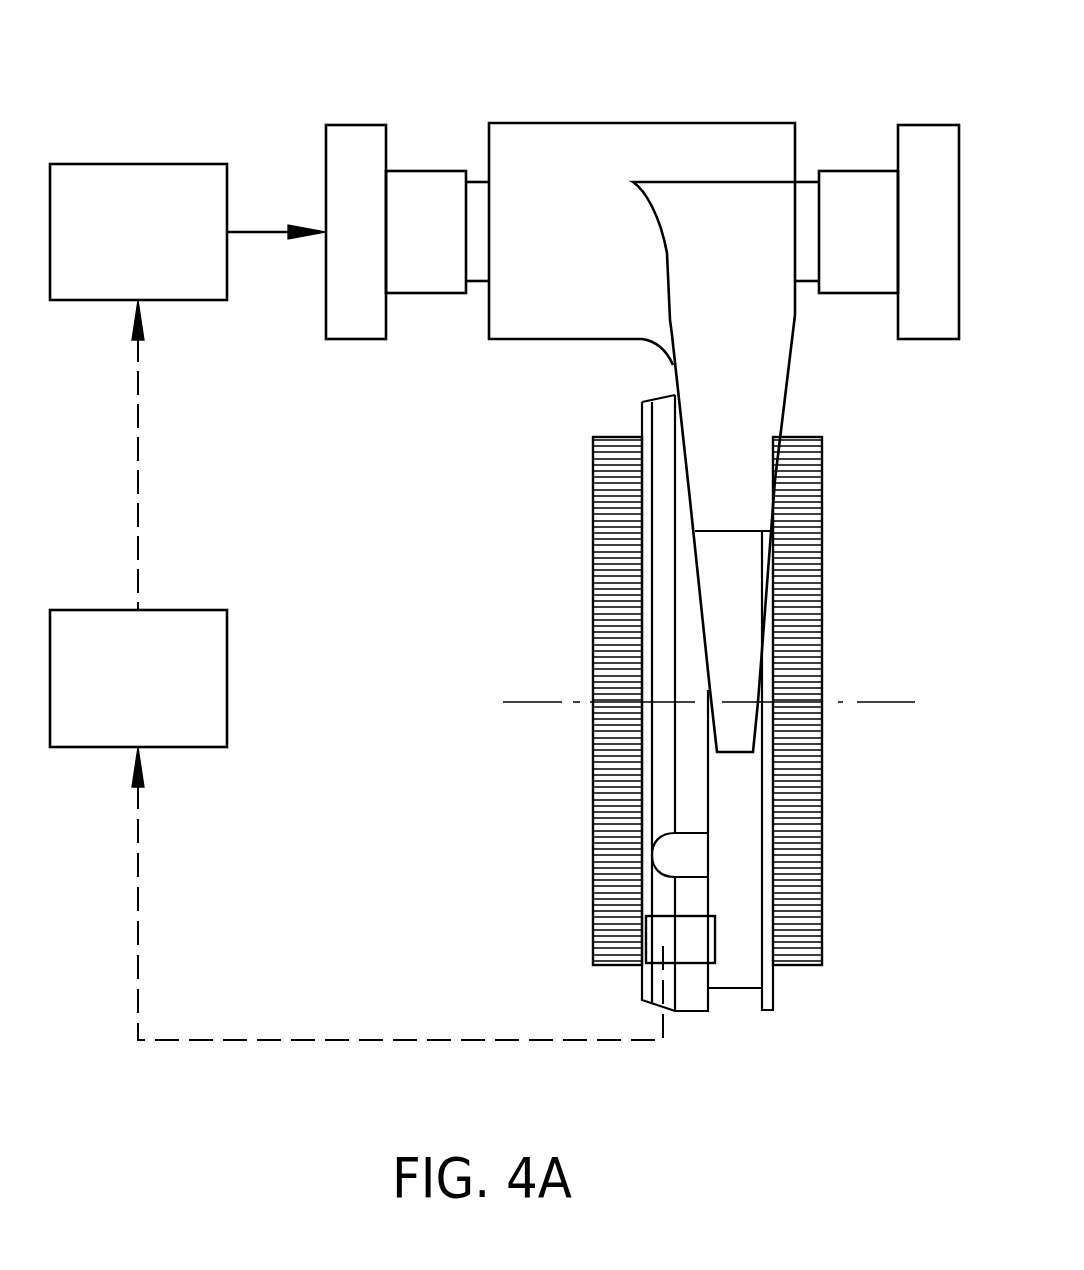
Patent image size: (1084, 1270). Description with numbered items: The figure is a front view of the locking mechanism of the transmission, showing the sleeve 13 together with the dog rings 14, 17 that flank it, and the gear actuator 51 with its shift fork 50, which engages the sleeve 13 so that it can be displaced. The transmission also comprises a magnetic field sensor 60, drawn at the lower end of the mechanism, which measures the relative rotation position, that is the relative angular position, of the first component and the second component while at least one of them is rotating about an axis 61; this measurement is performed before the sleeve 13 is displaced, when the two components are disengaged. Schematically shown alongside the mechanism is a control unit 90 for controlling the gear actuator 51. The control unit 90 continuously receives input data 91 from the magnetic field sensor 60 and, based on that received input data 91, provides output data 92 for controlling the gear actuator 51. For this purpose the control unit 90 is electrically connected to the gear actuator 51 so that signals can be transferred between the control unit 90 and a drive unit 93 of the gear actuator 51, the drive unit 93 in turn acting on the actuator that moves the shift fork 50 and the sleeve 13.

The gear actuator 51 is at (572, 66).
The shift fork 50 is at (740, 653).
The sleeve 13 is at (665, 620).
The dog ring 17 is at (623, 539).
The dog ring 14 is at (792, 538).
The axis 61 is at (880, 702).
The magnetic field sensor 60 is at (680, 938).
The drive unit 93 is at (136, 164).
The control unit 90 is at (98, 610).
The output data 92 is at (137, 438).
The input data 91 is at (378, 1040).